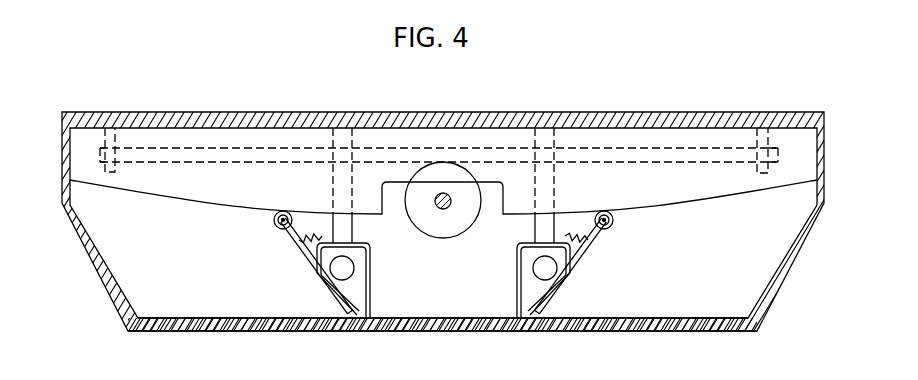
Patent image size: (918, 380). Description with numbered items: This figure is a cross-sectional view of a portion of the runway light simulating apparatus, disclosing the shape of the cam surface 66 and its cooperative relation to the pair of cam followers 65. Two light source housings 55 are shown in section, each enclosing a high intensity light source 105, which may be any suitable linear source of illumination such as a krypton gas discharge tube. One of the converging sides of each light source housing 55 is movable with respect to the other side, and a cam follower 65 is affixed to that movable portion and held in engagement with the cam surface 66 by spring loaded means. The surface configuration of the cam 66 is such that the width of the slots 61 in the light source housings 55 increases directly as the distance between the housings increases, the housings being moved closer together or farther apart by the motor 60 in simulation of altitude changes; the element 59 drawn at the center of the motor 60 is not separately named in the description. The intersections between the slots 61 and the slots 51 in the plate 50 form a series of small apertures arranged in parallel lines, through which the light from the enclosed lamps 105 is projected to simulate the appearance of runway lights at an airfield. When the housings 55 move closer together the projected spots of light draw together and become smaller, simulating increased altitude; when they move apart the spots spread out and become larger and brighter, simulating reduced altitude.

The plate 50 is at (459, 190).
The slots in plate 51 is at (287, 332).
The light source housing 55 is at (443, 280).
The shaft 59 is at (462, 214).
The motor 60 is at (434, 200).
The slots in light source housings 61 is at (443, 294).
The cam follower 65 is at (443, 262).
The cam surface 66 is at (443, 193).
The high intensity light source 105 is at (443, 270).